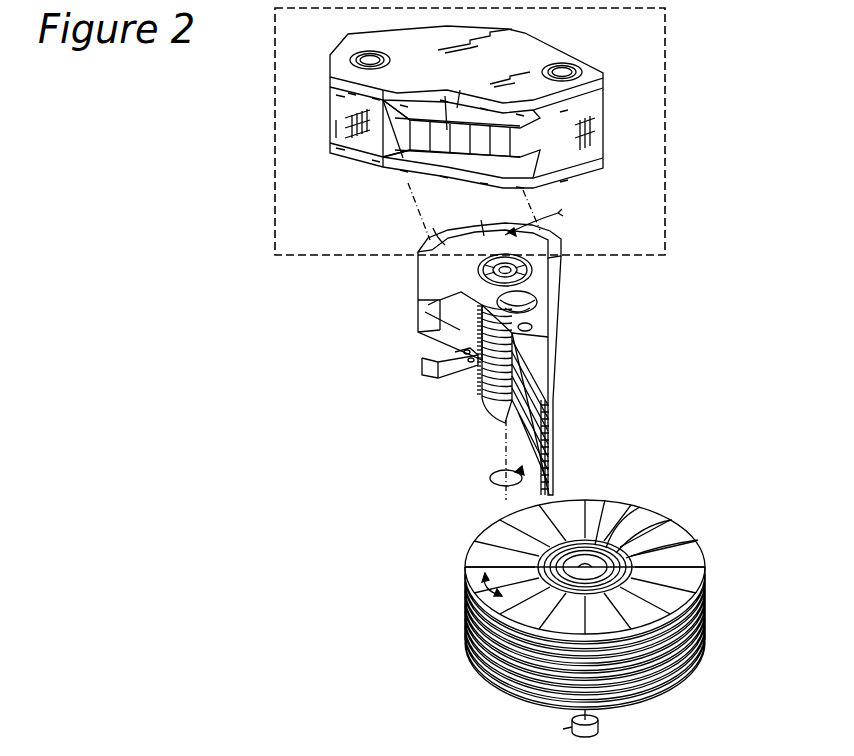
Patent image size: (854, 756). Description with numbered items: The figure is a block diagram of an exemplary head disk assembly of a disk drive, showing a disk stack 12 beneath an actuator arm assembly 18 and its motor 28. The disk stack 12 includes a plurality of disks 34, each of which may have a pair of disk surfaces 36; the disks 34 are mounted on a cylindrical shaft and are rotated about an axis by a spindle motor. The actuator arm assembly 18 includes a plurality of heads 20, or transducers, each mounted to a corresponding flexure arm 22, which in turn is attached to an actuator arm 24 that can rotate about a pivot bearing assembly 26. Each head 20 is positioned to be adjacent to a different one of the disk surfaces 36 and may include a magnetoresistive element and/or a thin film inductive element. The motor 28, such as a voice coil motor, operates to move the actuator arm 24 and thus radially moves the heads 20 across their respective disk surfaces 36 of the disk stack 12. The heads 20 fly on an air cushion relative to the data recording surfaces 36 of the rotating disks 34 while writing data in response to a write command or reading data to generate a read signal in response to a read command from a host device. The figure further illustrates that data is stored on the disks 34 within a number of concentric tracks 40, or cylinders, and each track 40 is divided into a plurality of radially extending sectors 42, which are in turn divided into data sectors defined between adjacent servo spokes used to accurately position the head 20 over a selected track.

The disk stack 12 is at (581, 602).
The actuator arm assembly 18 is at (587, 351).
The head 20 is at (548, 399).
The flexure arm 22 is at (548, 360).
The actuator arm 24 is at (545, 311).
The pivot bearing assembly 26 is at (532, 268).
The motor 28 is at (665, 124).
The disk 34 is at (607, 688).
The disk surface 36 is at (690, 576).
The track 40 is at (698, 540).
The sector 42 is at (478, 592).